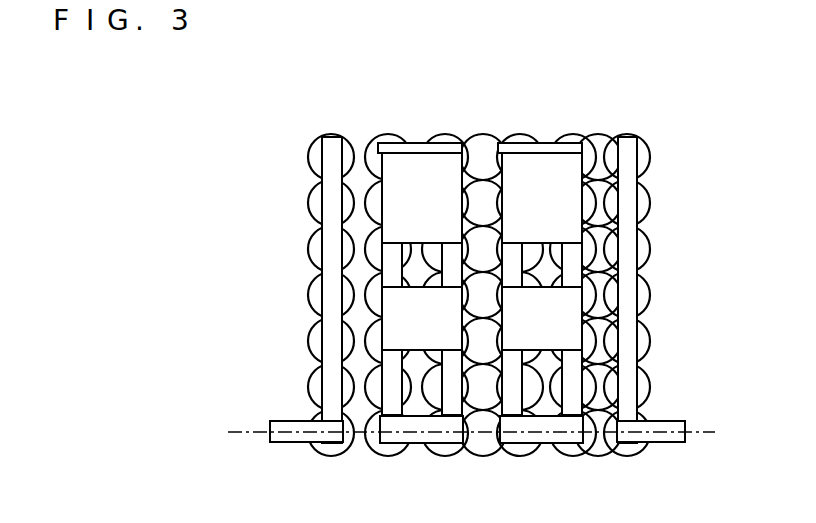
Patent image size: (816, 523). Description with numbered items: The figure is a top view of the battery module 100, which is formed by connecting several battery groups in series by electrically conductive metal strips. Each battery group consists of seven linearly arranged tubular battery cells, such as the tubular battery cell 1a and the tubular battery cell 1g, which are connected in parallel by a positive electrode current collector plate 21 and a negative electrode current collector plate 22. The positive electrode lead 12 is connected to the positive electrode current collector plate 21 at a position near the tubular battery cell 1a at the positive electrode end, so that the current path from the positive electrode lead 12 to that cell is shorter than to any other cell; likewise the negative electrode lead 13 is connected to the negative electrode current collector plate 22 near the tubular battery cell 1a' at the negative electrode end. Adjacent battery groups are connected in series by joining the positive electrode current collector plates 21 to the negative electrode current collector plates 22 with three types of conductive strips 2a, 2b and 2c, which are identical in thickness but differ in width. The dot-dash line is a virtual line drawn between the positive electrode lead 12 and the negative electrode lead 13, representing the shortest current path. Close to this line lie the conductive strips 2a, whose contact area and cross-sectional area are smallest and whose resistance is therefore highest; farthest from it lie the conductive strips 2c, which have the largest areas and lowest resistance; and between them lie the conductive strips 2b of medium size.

The battery module 100 is at (207, 87).
The tubular battery cell 1g is at (318, 148).
The positive electrode current collector plate 21 is at (331, 207).
The negative electrode current collector plate 22 is at (640, 344).
The conductive strip 2c is at (483, 153).
The conductive strip 2b is at (415, 318).
The conductive strip 2a is at (475, 448).
The tubular battery cell 1a is at (331, 461).
The tubular battery cell 1a' is at (627, 461).
The positive electrode lead 12 is at (275, 444).
The negative electrode lead 13 is at (674, 445).